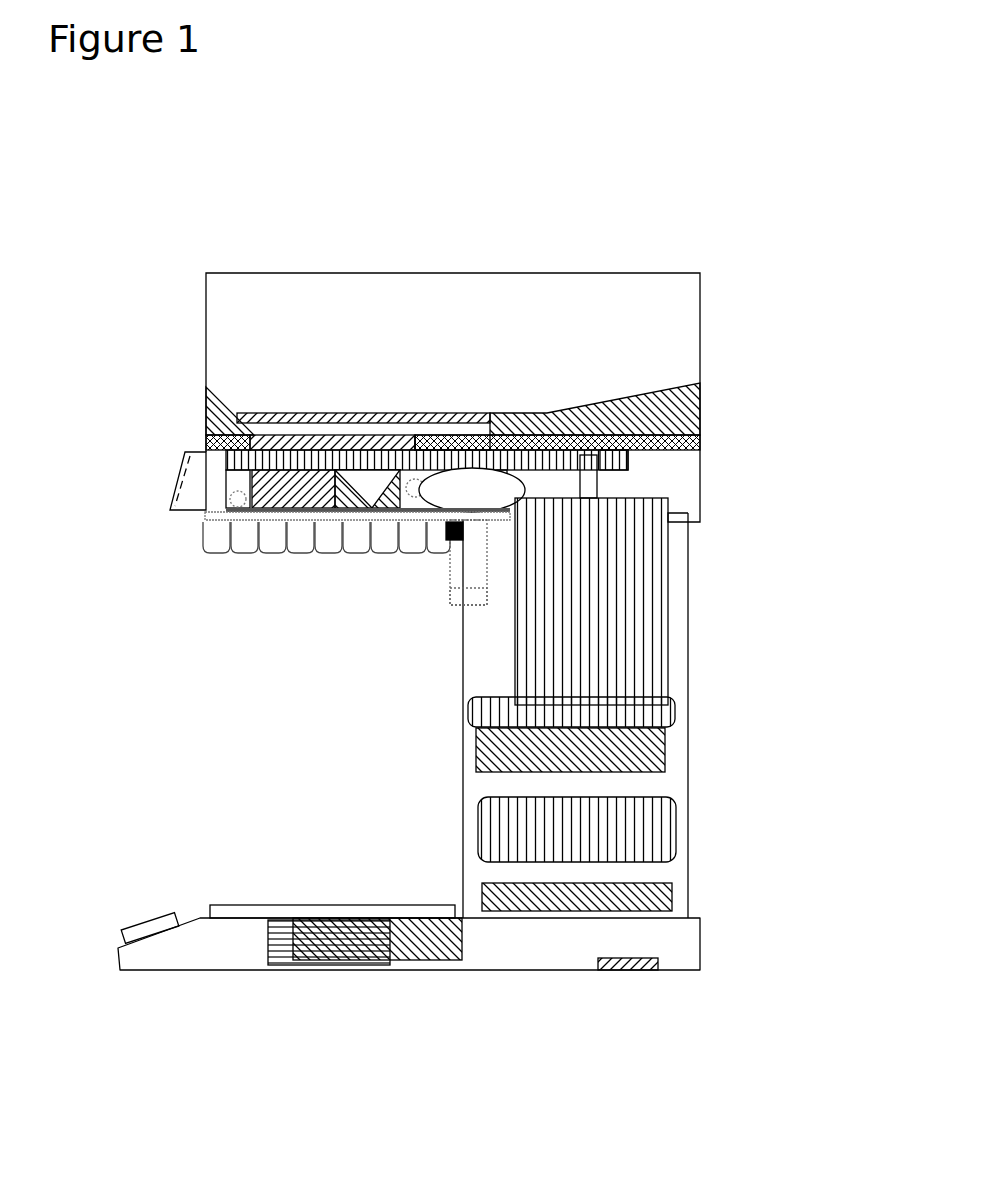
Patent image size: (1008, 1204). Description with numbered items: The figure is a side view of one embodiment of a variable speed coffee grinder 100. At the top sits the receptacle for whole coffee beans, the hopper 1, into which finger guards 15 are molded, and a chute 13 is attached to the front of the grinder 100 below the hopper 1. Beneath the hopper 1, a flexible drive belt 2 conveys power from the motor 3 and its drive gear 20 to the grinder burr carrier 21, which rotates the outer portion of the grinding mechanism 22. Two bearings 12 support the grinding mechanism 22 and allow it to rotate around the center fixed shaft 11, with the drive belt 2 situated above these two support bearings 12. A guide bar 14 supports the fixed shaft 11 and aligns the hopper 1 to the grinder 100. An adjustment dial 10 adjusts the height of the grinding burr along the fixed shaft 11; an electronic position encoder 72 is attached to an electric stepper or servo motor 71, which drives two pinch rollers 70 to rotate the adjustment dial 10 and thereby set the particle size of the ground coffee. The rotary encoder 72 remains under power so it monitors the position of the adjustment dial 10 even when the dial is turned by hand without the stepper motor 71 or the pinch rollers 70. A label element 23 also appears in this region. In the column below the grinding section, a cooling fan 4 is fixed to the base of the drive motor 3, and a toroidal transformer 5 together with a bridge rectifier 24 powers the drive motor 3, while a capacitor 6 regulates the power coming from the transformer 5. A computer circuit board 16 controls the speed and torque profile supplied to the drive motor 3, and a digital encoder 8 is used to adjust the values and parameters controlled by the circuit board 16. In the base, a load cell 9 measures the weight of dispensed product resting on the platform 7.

The receptacle for whole coffee beans 1 is at (703, 364).
The flexible drive belt 2 is at (557, 460).
The motor 3 is at (668, 568).
The cooling fan 4 is at (665, 748).
The toroidal transformer 5 is at (678, 829).
The capacitor 6 is at (268, 940).
The platform 7 is at (333, 905).
The digital encoder 8 is at (150, 920).
The load cell 9 is at (378, 960).
The adjustment dial 10 is at (322, 553).
The fixed shaft 11 is at (310, 490).
The bearings 12 is at (240, 478).
The chute 13 is at (185, 452).
The guide bar 14 is at (333, 433).
The finger guards 15 is at (355, 413).
The computer circuit board 16 is at (577, 913).
The drive gear 20 is at (625, 455).
The grinder burr carrier 21 is at (410, 446).
The grinding mechanism 22 is at (372, 483).
The label element 23 is at (512, 489).
The bridge rectifier 24 is at (658, 962).
The pinch rollers 70 is at (408, 710).
The stepper or servo motor 71 is at (450, 568).
The electronic position encoder 72 is at (465, 605).
The coffee grinder 100 is at (686, 612).